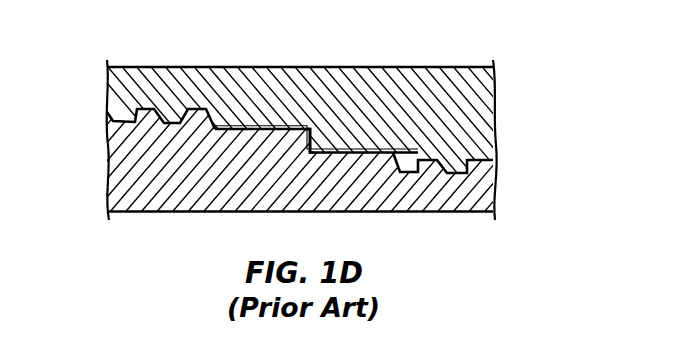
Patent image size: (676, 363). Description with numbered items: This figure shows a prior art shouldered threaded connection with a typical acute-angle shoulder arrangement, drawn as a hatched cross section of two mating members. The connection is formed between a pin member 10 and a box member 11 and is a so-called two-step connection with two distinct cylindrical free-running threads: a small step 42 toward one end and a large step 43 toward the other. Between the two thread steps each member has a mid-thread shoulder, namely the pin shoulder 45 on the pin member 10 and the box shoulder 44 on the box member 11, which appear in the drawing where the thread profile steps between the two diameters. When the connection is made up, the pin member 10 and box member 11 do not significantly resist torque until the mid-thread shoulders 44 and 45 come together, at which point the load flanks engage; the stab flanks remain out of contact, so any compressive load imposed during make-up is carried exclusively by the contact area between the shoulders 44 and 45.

The pin member 10 is at (395, 212).
The box member 11 is at (413, 67).
The small step 42 is at (495, 158).
The large step 43 is at (110, 114).
The box shoulder 44 is at (313, 133).
The pin shoulder 45 is at (310, 148).